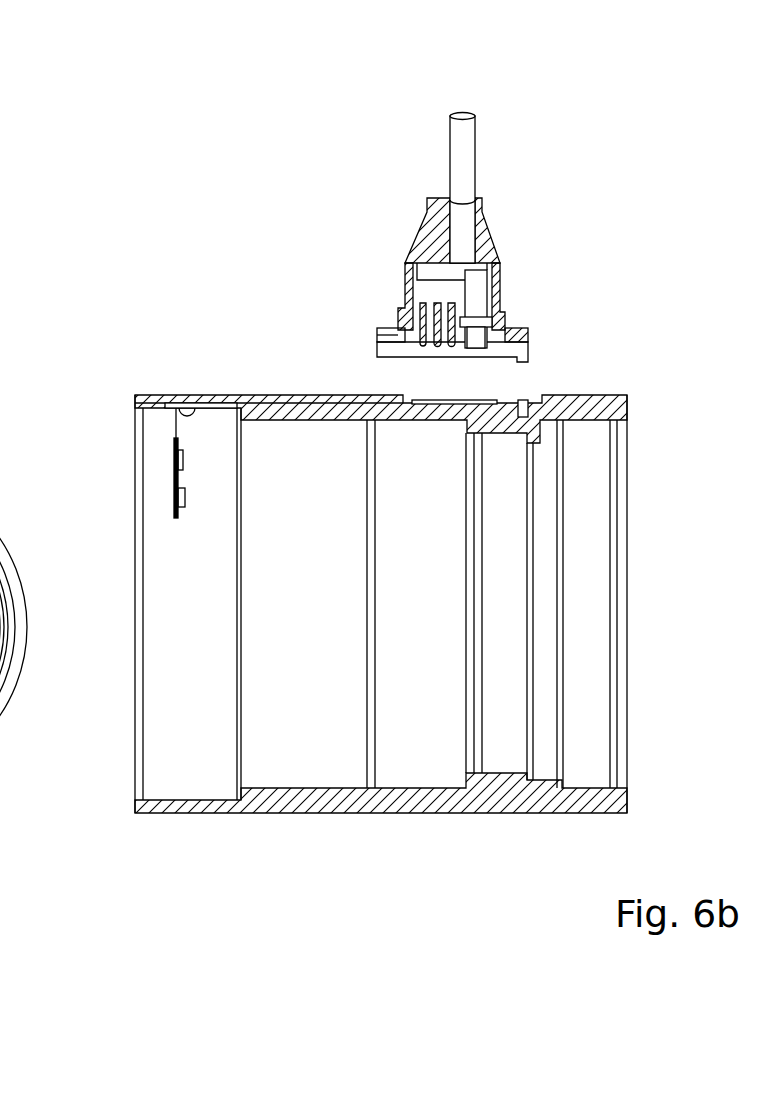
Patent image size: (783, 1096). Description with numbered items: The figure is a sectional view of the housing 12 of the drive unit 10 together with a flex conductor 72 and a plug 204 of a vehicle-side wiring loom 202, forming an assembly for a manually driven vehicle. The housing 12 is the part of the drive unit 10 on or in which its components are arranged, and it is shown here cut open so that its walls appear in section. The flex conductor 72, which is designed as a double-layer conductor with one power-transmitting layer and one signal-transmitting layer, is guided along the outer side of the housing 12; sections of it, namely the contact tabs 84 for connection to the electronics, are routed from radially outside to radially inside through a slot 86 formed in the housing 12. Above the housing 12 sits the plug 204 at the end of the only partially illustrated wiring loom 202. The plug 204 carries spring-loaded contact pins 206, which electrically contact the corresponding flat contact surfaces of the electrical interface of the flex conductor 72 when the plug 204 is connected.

The drive unit 10 is at (108, 525).
The housing 12 is at (302, 800).
The flex conductor 72 is at (277, 394).
The contact tabs 84 is at (172, 454).
The slot 86 is at (193, 402).
The wiring loom 202 is at (463, 165).
The plug 204 is at (497, 238).
The contact pins 206 is at (420, 310).